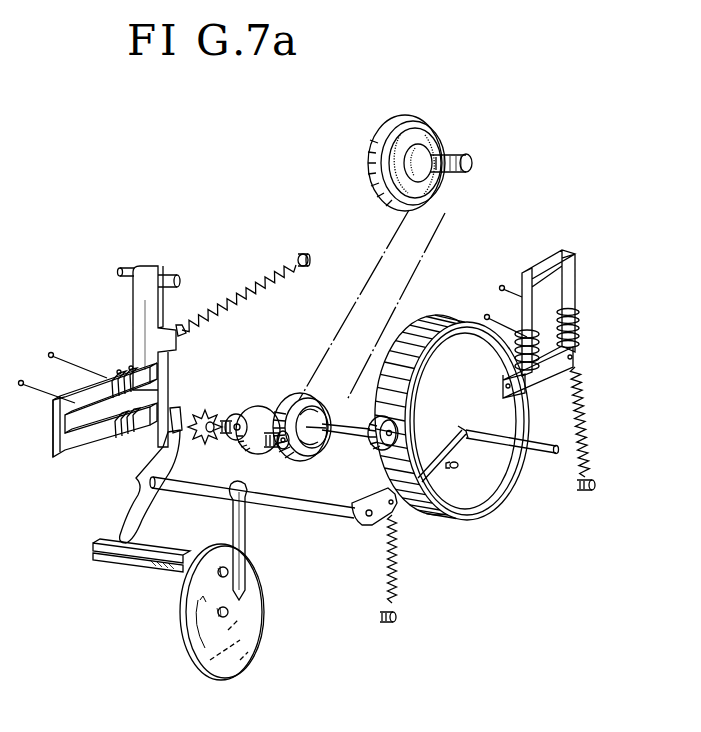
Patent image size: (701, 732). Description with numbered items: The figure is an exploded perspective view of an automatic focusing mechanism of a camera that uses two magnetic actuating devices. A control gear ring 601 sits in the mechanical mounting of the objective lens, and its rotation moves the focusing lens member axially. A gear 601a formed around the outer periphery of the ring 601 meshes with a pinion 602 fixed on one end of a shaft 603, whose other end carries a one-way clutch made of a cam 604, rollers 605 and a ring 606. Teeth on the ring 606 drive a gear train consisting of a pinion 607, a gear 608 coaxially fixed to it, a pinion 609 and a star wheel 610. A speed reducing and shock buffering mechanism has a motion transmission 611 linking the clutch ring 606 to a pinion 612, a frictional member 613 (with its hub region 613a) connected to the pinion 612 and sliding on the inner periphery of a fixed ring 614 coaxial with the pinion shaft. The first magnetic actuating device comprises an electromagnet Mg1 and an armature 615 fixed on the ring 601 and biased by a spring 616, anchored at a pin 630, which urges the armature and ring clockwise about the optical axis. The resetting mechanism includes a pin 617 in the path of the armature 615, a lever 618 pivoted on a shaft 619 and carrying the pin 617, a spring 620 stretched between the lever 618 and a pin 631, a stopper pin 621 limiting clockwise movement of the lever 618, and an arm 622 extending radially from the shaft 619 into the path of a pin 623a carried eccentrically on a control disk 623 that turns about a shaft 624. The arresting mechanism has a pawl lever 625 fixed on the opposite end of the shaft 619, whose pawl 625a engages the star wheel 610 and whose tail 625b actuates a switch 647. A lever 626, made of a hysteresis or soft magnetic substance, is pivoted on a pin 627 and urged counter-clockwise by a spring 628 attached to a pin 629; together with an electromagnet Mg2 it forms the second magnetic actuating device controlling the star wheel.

The control gear ring 601 is at (497, 487).
The gear 601a is at (444, 320).
The pinion 602 is at (398, 512).
The shaft 603 is at (378, 450).
The cam 604 is at (318, 408).
The rollers 605 is at (286, 450).
The ring 606 is at (292, 395).
The pinion 607 is at (272, 450).
The gear 608 is at (262, 408).
The pinion 609 is at (238, 414).
The star wheel 610 is at (208, 410).
The motion transmission 611 is at (374, 268).
The pinion 612 is at (470, 165).
The frictional member 613 is at (435, 148).
The hub 613a is at (420, 148).
The fixed ring 614 is at (385, 140).
The armature 615 is at (540, 375).
The spring 616 is at (585, 388).
The pin 617 is at (532, 453).
The lever 618 is at (447, 440).
The shaft 619 is at (318, 512).
The spring 620 is at (397, 580).
The stopper pin 621 is at (458, 470).
The arm 622 is at (247, 565).
The control disk 623 is at (236, 668).
The pin 623a is at (220, 566).
The shaft 624 is at (229, 615).
The pawl lever 625 is at (130, 522).
The pawl 625a is at (180, 408).
The tail 625b is at (100, 554).
The lever 626 is at (132, 310).
The pin 627 is at (176, 275).
The spring 628 is at (246, 290).
The pin 629 is at (301, 254).
The pin 630 is at (596, 484).
The pin 631 is at (396, 622).
The switch 647 is at (145, 566).
The electromagnet Mg1 is at (576, 282).
The electromagnet Mg2 is at (58, 458).